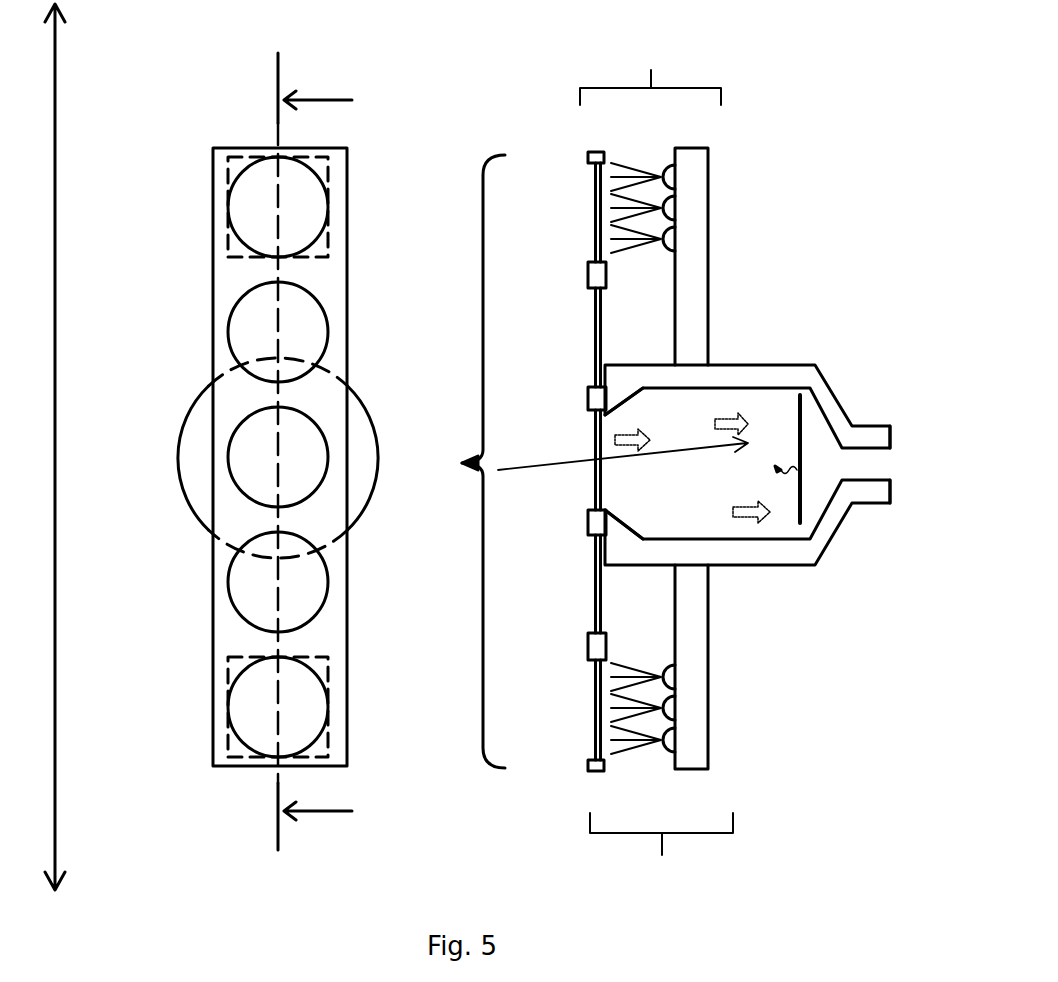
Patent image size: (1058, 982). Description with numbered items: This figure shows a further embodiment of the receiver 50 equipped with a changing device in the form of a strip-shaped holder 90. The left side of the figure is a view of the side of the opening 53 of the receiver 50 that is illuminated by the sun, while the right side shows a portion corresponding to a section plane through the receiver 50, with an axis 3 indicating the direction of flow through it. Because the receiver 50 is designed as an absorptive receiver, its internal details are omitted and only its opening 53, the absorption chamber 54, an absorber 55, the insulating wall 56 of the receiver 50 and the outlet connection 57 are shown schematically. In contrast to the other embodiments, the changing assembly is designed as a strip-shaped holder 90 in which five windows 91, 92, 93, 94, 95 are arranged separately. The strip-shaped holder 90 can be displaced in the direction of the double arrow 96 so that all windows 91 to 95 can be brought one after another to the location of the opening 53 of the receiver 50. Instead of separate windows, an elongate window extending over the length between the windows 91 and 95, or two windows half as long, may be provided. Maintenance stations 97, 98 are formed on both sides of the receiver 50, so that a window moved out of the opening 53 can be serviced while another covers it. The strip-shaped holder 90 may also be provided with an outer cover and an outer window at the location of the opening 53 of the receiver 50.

The longitudinal axis / flow direction 3 is at (532, 463).
The receiver 50 is at (165, 392).
The opening 53 is at (604, 510).
The absorption chamber 54 is at (703, 441).
The absorber 55 is at (800, 483).
The insulating wall 56 is at (178, 480).
The outlet connection 57 is at (880, 422).
The strip-shaped holder 90 is at (213, 632).
The window 91 is at (320, 678).
The window 92 is at (318, 560).
The window 93 is at (310, 417).
The window 94 is at (312, 300).
The window 95 is at (320, 178).
The double arrow 96 is at (55, 160).
The maintenance station 97 is at (238, 757).
The maintenance station 98 is at (262, 158).